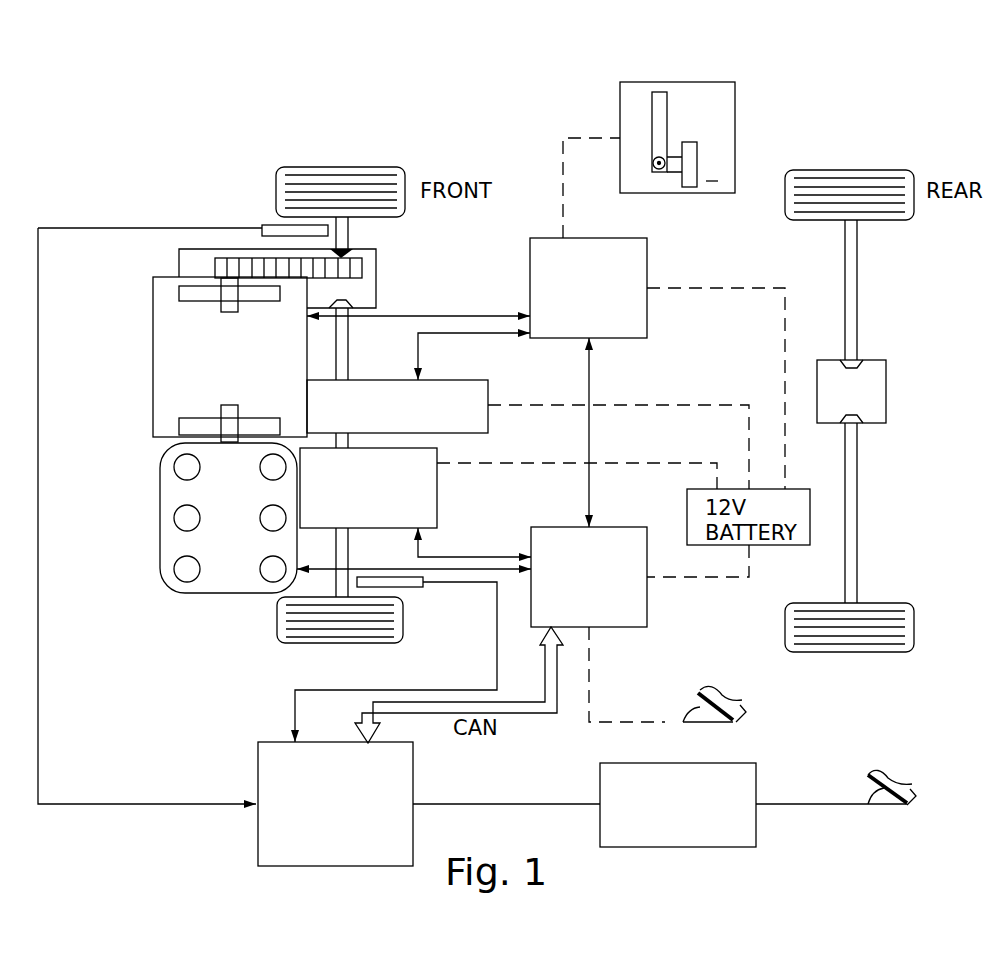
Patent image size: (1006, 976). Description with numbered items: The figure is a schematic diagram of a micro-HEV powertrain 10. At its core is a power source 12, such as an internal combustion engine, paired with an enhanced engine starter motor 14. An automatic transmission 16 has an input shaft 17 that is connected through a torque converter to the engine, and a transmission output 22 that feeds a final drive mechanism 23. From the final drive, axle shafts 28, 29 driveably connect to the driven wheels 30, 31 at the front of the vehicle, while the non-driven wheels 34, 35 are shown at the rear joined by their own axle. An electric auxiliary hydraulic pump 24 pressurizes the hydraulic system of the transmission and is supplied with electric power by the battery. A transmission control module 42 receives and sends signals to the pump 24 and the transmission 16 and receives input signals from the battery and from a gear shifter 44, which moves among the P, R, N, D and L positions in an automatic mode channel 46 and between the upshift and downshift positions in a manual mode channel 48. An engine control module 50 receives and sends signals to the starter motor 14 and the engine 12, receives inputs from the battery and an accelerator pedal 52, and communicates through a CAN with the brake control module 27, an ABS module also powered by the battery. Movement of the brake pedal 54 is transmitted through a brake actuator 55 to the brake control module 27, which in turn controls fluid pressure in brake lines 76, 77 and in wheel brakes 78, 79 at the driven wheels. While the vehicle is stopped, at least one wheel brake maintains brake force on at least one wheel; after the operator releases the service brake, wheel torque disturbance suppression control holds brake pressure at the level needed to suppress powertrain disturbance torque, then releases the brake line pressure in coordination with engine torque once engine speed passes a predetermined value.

The micro-HEV powertrain 10 is at (413, 96).
The power source 12 is at (242, 593).
The enhanced engine starter motor 14 is at (437, 488).
The automatic transmission 16 is at (152, 333).
The input shaft 17 is at (230, 426).
The transmission output 22 is at (229, 288).
The final drive mechanism 23 is at (376, 262).
The electric auxiliary hydraulic pump 24 is at (488, 410).
The brake control module 27 is at (413, 765).
The axle shaft 28 is at (348, 232).
The axle shaft 29 is at (340, 585).
The driven wheel 30 is at (277, 192).
The driven wheel 31 is at (335, 643).
The non-driven wheel 34 is at (886, 221).
The non-driven wheel 35 is at (884, 600).
The transmission control module 42 is at (647, 303).
The gear shifter 44 is at (735, 150).
The automatic mode channel 46 is at (660, 102).
The manual mode channel 48 is at (688, 143).
The engine control module 50 is at (647, 607).
The accelerator pedal 52 is at (693, 700).
The brake pedal 54 is at (867, 777).
The brake actuator 55 is at (625, 762).
The brake line 76 is at (248, 228).
The brake line 77 is at (433, 582).
The wheel brake 78 is at (267, 233).
The wheel brake 79 is at (412, 588).